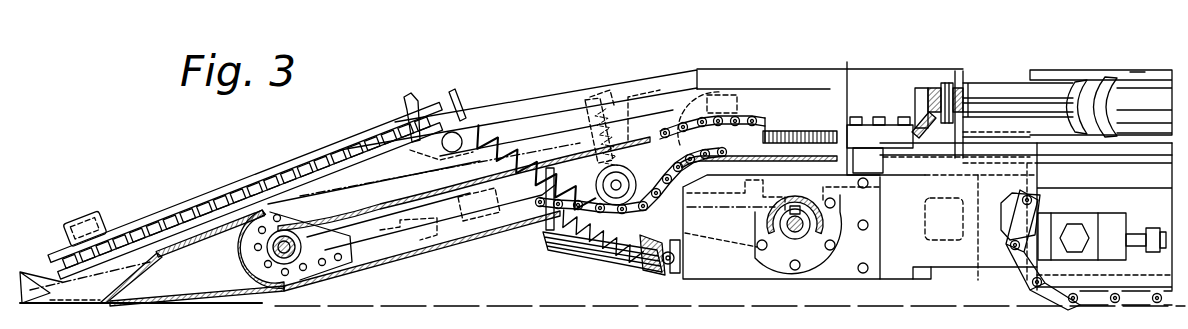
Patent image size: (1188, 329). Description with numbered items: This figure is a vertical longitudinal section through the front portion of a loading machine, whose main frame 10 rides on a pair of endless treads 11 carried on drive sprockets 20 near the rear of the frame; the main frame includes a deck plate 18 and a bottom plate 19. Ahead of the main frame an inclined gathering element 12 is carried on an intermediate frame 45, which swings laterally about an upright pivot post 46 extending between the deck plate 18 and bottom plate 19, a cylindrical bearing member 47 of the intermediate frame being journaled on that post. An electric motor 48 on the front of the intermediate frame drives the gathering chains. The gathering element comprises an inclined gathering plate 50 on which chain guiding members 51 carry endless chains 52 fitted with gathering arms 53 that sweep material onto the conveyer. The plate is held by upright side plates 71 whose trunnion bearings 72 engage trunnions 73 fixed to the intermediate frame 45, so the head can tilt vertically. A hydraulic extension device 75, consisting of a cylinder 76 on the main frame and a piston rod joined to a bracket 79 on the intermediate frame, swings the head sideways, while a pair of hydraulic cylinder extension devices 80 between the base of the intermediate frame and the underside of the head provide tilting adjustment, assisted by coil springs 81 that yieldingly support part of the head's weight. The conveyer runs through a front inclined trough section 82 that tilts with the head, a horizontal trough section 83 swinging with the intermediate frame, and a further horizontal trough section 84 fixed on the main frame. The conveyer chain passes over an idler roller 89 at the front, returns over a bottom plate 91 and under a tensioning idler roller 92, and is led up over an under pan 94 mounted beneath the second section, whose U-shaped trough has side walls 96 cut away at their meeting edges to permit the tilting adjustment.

The main frame 10 is at (1155, 302).
The endless treads 11 is at (1115, 303).
The gathering element 12 is at (490, 104).
The deck plate 18 is at (990, 102).
The bottom plate 19 is at (928, 279).
The drive sprockets 20 is at (1085, 303).
The intermediate frame 45 is at (822, 74).
The upright pivot post 46 is at (970, 258).
The cylindrical bearing member 47 is at (965, 212).
The electric motor 48 is at (845, 276).
The inclined gathering plate 50 is at (232, 222).
The chain guiding members 51 is at (193, 202).
The endless chains 52 is at (147, 215).
The gathering arms 53 is at (424, 96).
The upright side plates 71 is at (550, 92).
The trunnion bearings 72 is at (642, 93).
The trunnions 73 is at (713, 90).
The hydraulic extension device 75 is at (1138, 88).
The cylinder 76 is at (1101, 75).
The bracket 79 is at (933, 86).
The hydraulic cylinder extension devices 80 is at (582, 253).
The coil springs 81 is at (617, 260).
The front inclined trough section 82 is at (468, 236).
The horizontal trough section 83 is at (941, 88).
The horizontal trough section 84 is at (1138, 70).
The idler roller 89 is at (263, 265).
The bottom plate 91 is at (358, 270).
The tensioning idler roller 92 is at (583, 148).
The under pan 94 is at (817, 174).
The side walls 96 is at (895, 80).